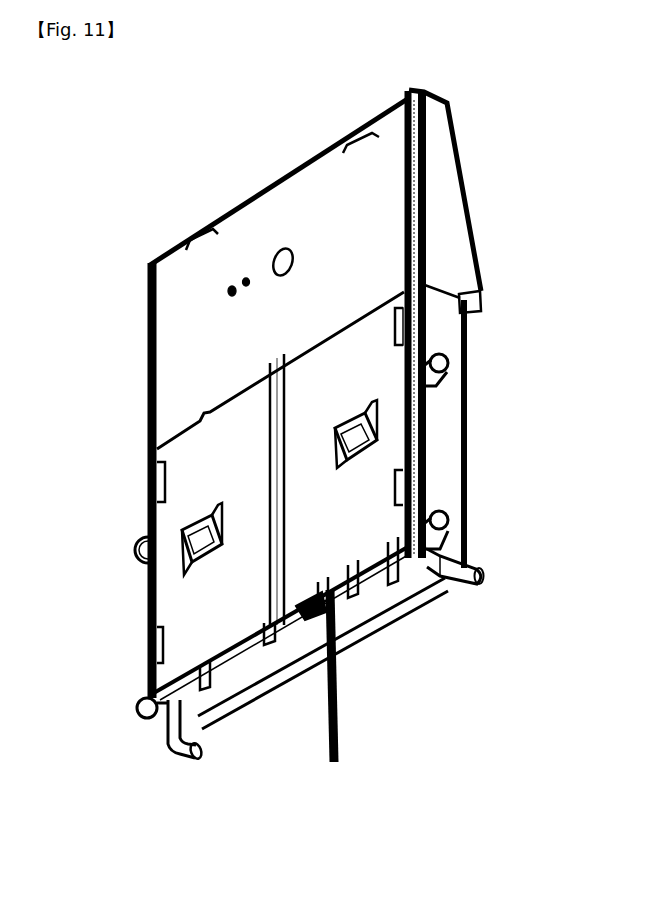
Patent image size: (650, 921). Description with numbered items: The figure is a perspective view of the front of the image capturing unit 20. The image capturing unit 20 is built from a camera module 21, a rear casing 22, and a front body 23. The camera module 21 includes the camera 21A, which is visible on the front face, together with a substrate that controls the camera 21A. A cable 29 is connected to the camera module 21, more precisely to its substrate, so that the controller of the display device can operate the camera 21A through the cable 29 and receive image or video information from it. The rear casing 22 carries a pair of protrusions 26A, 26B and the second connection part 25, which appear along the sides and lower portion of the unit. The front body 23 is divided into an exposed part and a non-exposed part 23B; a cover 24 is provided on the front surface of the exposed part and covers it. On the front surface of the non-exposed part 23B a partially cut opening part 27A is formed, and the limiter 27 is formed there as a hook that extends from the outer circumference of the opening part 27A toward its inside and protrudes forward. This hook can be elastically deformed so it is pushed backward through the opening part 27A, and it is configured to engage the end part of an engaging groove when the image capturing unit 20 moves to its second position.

The image capturing unit 20 is at (110, 163).
The camera module 21 is at (299, 410).
The camera 21A is at (272, 255).
The rear casing 22 is at (440, 277).
The front body 23 is at (360, 345).
The non-exposed part 23B is at (200, 468).
The cover 24 is at (385, 222).
The second connection part 25 is at (466, 588).
The protrusion 26A is at (448, 362).
The protrusion 26B is at (450, 515).
The limiter 27 is at (372, 445).
The opening part 27A is at (352, 473).
The cable 29 is at (340, 728).